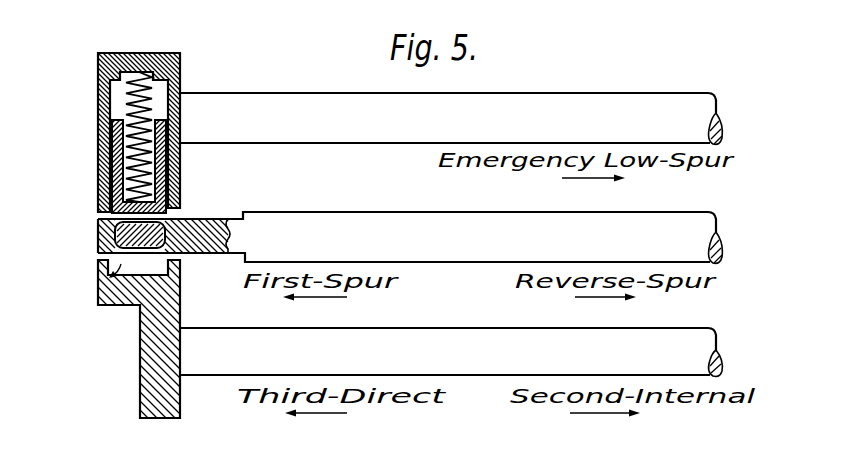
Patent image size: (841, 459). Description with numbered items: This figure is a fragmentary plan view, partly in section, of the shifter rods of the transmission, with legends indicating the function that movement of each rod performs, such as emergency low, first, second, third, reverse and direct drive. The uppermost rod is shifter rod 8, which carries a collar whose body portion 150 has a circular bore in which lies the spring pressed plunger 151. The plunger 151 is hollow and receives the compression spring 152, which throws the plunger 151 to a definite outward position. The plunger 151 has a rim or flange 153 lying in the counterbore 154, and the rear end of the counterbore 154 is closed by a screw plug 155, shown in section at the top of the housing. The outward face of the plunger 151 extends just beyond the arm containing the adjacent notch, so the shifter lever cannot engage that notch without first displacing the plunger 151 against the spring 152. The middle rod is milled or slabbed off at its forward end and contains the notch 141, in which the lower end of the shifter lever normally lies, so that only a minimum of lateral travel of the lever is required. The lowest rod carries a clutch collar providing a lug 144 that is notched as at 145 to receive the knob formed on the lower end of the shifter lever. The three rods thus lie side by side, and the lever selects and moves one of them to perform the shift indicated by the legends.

The shifter rod 8 is at (244, 100).
The notch 141 is at (102, 219).
The lug 144 is at (152, 312).
The notch 145 is at (102, 278).
The body portion 150 is at (179, 78).
The spring pressed plunger 151 is at (100, 160).
The compression spring 152 is at (128, 78).
The rim or flange 153 is at (104, 128).
The counterbore 154 is at (112, 92).
The screw plug 155 is at (161, 58).